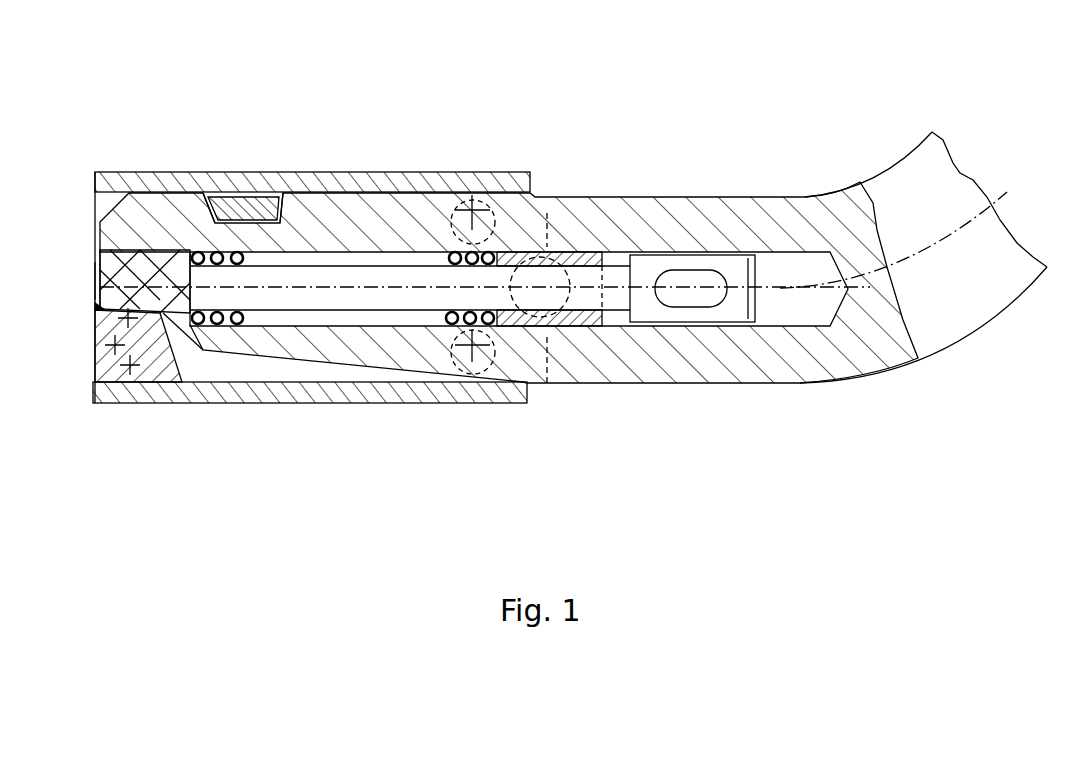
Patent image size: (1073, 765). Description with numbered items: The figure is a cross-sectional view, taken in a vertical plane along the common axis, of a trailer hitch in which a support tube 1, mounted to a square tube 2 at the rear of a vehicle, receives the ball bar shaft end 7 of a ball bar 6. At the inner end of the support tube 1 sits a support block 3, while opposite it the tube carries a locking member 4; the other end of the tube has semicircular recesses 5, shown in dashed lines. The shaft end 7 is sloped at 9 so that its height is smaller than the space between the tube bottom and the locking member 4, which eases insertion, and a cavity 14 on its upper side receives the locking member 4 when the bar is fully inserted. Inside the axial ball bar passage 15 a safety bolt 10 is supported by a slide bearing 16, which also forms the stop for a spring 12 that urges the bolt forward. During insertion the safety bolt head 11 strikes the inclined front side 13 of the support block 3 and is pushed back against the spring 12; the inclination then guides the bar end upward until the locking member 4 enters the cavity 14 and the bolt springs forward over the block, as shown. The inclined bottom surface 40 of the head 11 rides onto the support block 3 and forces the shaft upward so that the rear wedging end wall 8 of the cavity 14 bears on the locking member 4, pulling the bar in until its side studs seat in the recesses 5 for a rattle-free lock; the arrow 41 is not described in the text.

The support tube 1 is at (295, 362).
The square tube 2 is at (437, 185).
The support block 3 is at (122, 372).
The locking member 4 is at (252, 195).
The semicircular recesses 5 is at (545, 330).
The ball bar 6 is at (1020, 240).
The ball bar shaft end 7 is at (667, 210).
The rear wedging end wall 8 is at (223, 198).
The slope 9 is at (248, 368).
The safety bolt 10 is at (358, 278).
The safety bolt head 11 is at (111, 263).
The spring 12 is at (488, 248).
The front side of the support block 13 is at (187, 355).
The cavity 14 is at (290, 192).
The ball bar passage 15 is at (395, 322).
The slide bearing 16 is at (585, 250).
The inclined bottom surface 40 is at (120, 316).
The front face 41 is at (78, 276).